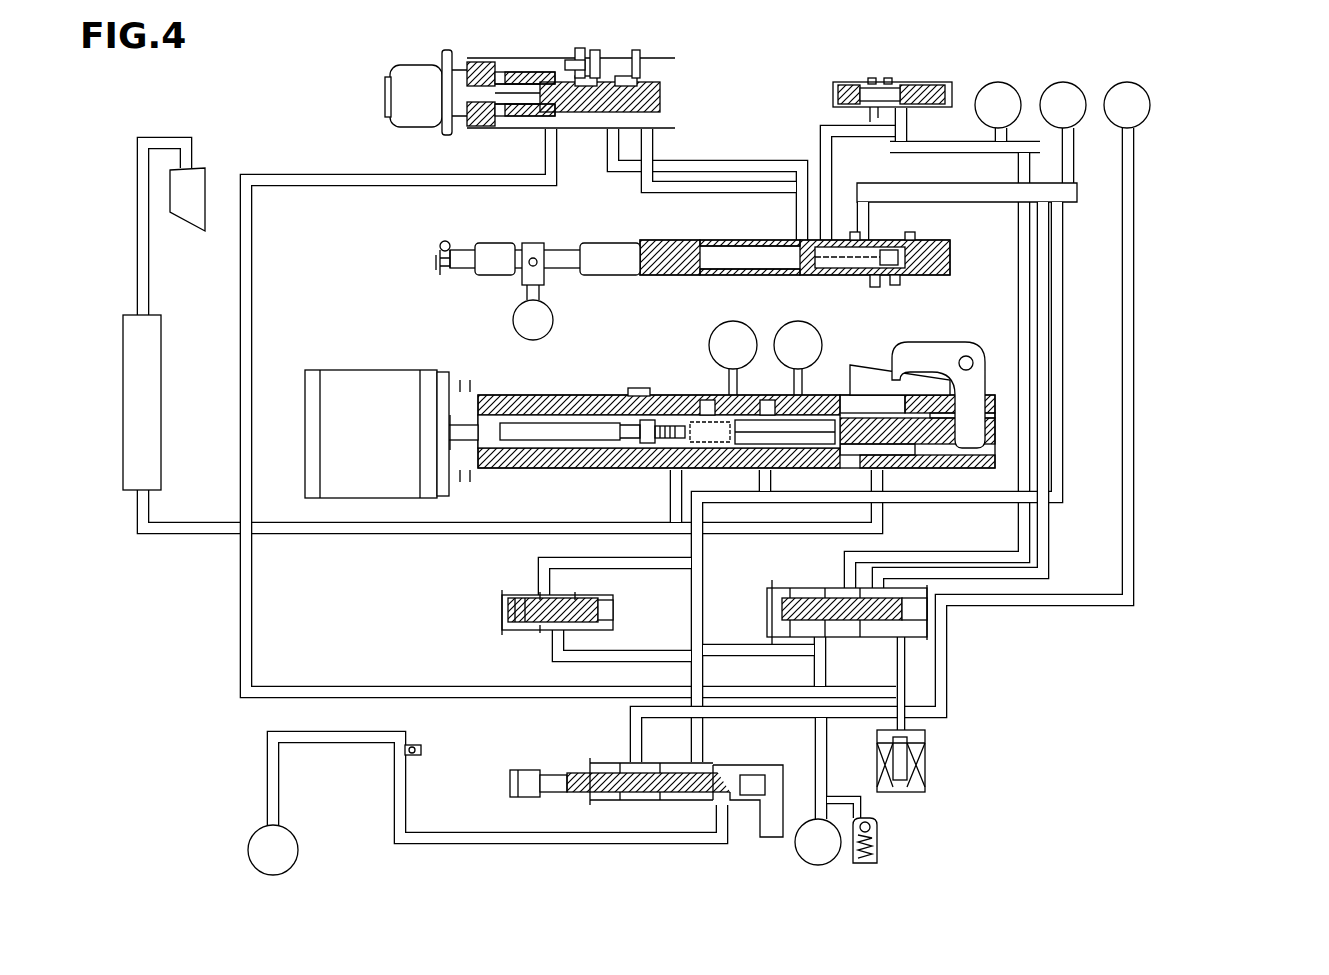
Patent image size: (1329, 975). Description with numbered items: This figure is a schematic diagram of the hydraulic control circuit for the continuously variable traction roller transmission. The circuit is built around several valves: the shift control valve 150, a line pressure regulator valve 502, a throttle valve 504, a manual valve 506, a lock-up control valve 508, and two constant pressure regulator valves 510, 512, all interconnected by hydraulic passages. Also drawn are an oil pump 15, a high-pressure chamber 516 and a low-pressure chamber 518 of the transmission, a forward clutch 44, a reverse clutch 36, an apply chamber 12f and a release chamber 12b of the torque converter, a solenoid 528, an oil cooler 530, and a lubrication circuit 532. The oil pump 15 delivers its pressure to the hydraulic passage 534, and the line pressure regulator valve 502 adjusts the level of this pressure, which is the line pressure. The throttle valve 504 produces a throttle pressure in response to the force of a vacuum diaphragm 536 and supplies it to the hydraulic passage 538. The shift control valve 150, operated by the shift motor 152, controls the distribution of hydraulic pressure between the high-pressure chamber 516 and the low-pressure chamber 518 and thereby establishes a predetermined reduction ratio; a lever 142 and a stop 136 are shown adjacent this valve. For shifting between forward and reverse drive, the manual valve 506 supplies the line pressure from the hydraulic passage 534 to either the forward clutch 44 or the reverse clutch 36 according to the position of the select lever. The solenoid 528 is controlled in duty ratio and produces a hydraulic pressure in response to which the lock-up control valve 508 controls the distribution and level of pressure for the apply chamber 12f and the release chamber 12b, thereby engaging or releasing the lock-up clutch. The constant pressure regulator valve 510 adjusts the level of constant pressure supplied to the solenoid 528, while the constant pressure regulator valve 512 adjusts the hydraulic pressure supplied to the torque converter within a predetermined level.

The vacuum diaphragm 536 is at (440, 66).
The throttle valve 504 is at (578, 76).
The constant pressure regulator valve 512 is at (903, 78).
The release chamber 12b is at (996, 82).
The reverse clutch 36 is at (1148, 112).
The oil pump 15 is at (1080, 118).
The lubrication circuit 532 is at (212, 176).
The hydraulic passage 538 is at (722, 160).
The line pressure regulator valve 502 is at (645, 238).
The hydraulic passage 534 is at (970, 205).
The low-pressure chamber 518 is at (733, 320).
The high-pressure chamber 516 is at (803, 321).
The stop 136 is at (852, 372).
The lever 142 is at (970, 342).
The shift motor 152 is at (372, 368).
The shift control valve 150 is at (605, 392).
The oil cooler 530 is at (162, 382).
The constant pressure regulator valve 510 is at (510, 593).
The lock-up control valve 508 is at (783, 590).
The manual valve 506 is at (580, 765).
The solenoid 528 is at (928, 752).
The forward clutch 44 is at (258, 829).
The apply chamber 12f is at (796, 840).